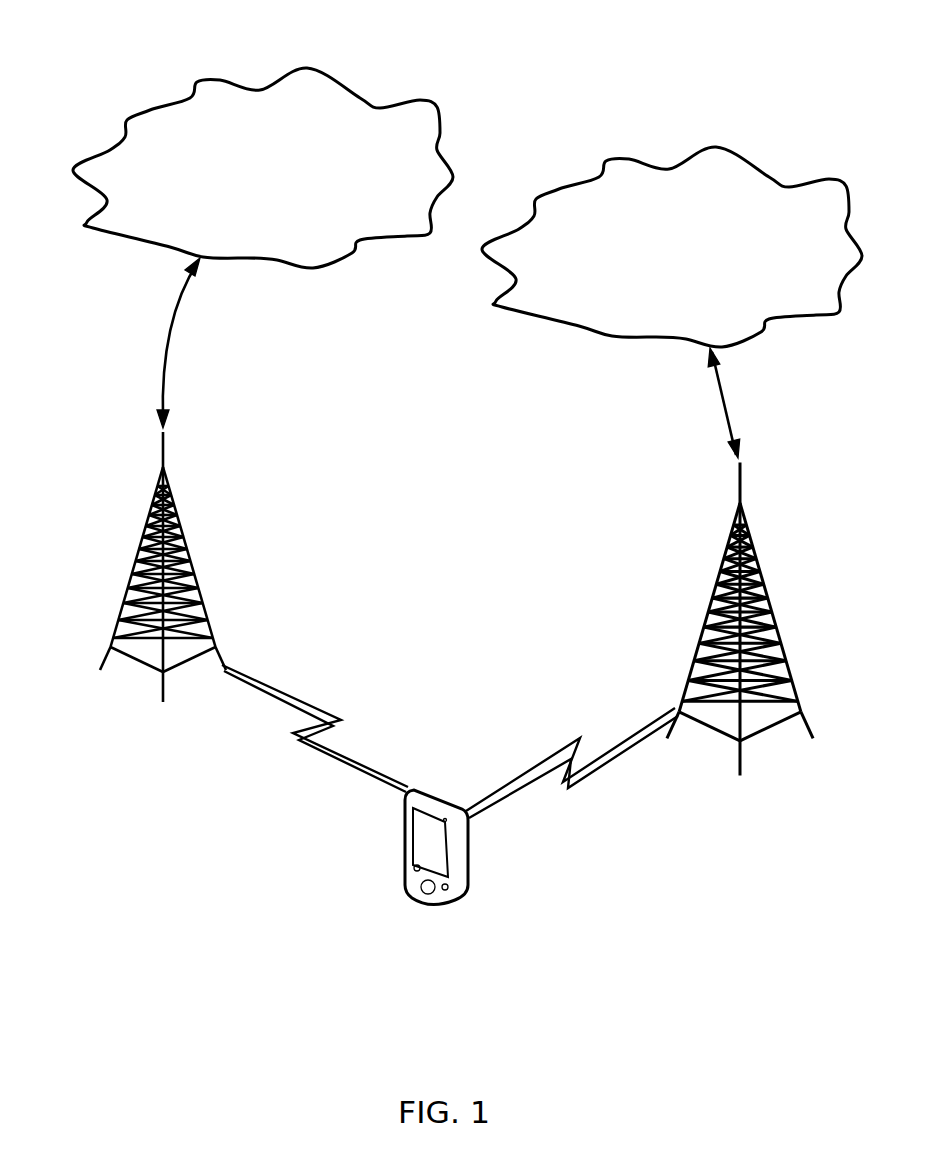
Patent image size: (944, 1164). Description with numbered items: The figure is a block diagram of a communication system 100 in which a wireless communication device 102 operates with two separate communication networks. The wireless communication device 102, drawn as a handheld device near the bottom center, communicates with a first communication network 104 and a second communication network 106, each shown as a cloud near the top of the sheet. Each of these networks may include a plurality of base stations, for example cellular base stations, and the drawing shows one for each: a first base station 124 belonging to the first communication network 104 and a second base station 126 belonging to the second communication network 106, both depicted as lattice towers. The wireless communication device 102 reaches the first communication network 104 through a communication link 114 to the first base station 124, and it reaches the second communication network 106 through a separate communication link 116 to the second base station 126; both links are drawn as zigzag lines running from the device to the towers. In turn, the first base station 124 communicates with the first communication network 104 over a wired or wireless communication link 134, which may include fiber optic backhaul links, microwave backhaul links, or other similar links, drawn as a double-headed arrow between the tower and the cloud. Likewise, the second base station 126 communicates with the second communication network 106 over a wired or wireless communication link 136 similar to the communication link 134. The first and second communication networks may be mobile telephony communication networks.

The communication system 100 is at (180, 905).
The wireless communication device 102 is at (407, 864).
The first communication network 104 is at (263, 147).
The second communication network 106 is at (672, 228).
The communication link 114 is at (315, 728).
The communication link 116 is at (571, 763).
The first base station 124 is at (137, 567).
The second base station 126 is at (725, 618).
The wired or wireless communication link 134 is at (143, 343).
The wired or wireless communication link 136 is at (691, 403).